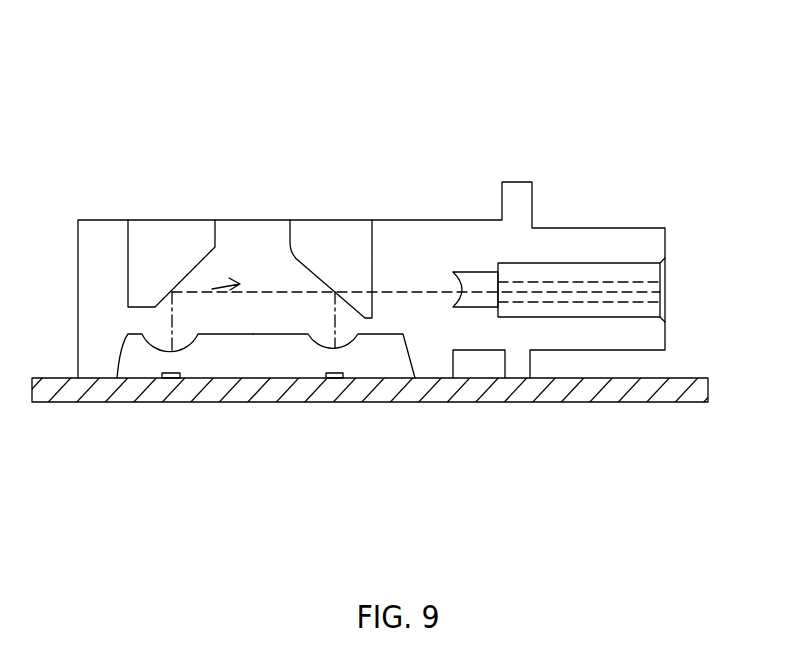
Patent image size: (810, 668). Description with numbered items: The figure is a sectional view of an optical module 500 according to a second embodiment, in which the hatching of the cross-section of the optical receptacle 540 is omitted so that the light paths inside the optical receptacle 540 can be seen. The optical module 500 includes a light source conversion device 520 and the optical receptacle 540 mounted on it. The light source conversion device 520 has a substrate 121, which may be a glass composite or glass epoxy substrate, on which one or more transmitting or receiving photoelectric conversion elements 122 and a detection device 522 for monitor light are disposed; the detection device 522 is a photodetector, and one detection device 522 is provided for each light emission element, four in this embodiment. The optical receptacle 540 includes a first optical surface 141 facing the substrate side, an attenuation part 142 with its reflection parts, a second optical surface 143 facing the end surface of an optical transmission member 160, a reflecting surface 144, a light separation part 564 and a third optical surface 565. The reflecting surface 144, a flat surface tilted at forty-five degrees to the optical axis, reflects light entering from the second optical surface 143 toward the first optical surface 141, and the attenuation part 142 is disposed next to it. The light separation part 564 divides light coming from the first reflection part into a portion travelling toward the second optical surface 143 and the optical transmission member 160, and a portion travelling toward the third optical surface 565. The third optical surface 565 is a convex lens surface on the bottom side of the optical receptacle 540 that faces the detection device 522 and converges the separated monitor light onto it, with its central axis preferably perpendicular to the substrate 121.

The optical module 500 is at (517, 90).
The optical receptacle 540 is at (663, 211).
The light source conversion device 520 is at (663, 413).
The substrate 121 is at (428, 388).
The photoelectric conversion element 122 is at (170, 378).
The first optical surface 141 is at (148, 338).
The attenuation part 142 is at (212, 252).
The reflecting surface 144 is at (171, 263).
The second optical surface 143 is at (452, 273).
The optical transmission member 160 is at (593, 302).
The light separation part 564 is at (297, 261).
The third optical surface 565 is at (318, 341).
The detection device 522 is at (335, 378).